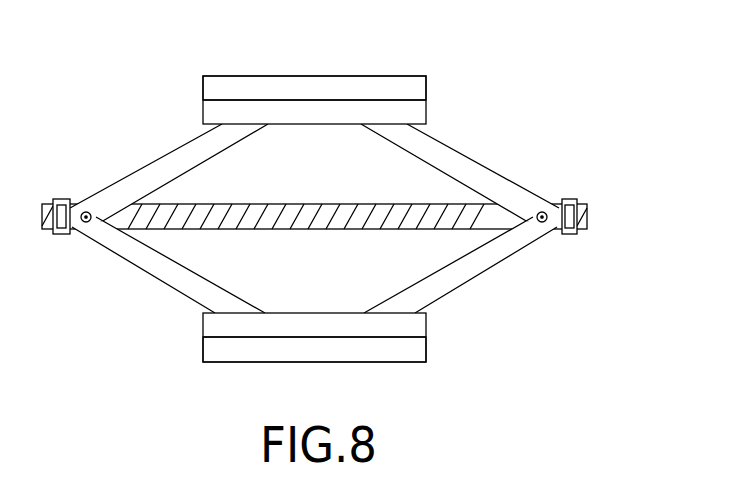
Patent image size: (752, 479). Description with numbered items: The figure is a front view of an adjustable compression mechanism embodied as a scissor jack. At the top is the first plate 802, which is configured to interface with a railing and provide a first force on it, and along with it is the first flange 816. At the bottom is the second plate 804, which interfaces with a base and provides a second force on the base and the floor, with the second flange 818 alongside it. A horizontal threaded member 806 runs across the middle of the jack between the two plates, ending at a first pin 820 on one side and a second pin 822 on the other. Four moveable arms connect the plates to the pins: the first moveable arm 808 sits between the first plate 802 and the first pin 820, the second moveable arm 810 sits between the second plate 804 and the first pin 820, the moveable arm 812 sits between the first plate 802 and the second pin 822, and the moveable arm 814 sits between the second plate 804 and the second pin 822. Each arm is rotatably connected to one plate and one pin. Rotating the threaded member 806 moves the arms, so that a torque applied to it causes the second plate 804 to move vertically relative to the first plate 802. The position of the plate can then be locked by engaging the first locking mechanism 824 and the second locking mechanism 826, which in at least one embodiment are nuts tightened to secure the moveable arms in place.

The first plate 802 is at (418, 113).
The second plate 804 is at (413, 325).
The threaded member 806 is at (588, 216).
The first moveable arm 808 is at (480, 165).
The second moveable arm 810 is at (530, 247).
The moveable arm 812 is at (158, 162).
The moveable arm 814 is at (153, 266).
The first flange 816 is at (367, 87).
The second flange 818 is at (393, 350).
The first pin 820 is at (546, 211).
The second pin 822 is at (85, 211).
The first locking mechanism 824 is at (575, 235).
The second locking mechanism 826 is at (62, 235).